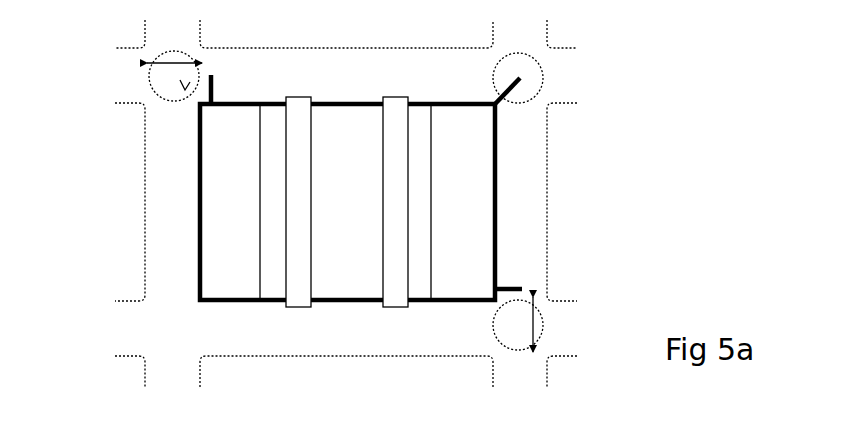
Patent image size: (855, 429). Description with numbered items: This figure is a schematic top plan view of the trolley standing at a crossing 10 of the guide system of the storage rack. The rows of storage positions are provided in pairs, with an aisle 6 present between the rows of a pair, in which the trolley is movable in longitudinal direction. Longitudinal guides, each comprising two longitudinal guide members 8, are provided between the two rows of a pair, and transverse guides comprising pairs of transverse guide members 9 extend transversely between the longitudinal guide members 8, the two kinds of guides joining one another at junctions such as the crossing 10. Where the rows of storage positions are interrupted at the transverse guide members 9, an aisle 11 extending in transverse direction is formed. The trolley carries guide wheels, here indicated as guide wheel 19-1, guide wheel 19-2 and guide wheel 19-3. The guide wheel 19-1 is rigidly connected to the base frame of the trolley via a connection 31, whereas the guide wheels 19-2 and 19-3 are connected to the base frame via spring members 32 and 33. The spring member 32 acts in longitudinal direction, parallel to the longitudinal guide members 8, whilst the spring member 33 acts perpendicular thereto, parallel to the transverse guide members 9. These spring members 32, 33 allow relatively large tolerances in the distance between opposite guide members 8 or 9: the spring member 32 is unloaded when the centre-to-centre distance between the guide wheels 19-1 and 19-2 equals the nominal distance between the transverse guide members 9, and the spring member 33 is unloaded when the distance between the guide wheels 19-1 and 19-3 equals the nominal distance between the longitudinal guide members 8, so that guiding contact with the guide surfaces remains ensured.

The aisle 6 is at (648, 209).
The longitudinal guide member 8 is at (350, 92).
The transverse guide member 9 is at (176, 212).
The crossing 10 is at (360, 219).
The aisle 11 is at (356, 403).
The connection 31 is at (508, 80).
The spring member 32 is at (203, 76).
The spring member 33 is at (522, 308).
The guide wheel 19-1 is at (523, 72).
The guide wheel 19-2 is at (162, 85).
The guide wheel 19-3 is at (540, 320).